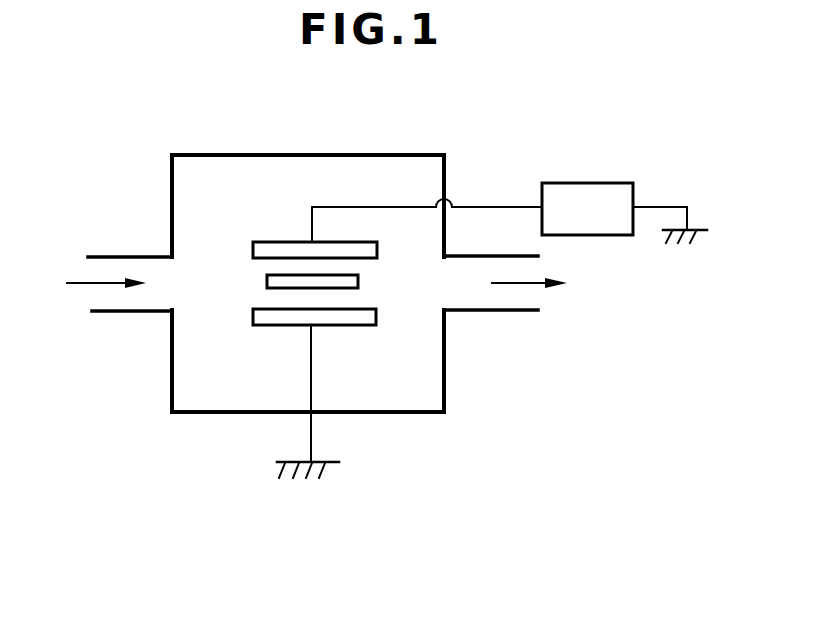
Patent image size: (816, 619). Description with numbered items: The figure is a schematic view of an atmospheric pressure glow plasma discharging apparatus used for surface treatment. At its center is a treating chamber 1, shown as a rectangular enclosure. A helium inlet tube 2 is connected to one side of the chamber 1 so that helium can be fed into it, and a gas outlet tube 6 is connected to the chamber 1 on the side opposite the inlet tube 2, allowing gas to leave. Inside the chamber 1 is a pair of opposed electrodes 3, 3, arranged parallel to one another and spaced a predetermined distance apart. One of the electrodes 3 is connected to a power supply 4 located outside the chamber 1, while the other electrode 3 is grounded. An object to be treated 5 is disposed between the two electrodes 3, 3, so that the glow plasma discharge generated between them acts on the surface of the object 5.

The treating chamber 1 is at (311, 173).
The helium inlet tube 2 is at (113, 256).
The opposed electrodes 3 is at (372, 248).
The power supply 4 is at (582, 205).
The object to be treated 5 is at (354, 278).
The gas outlet tube 6 is at (525, 312).